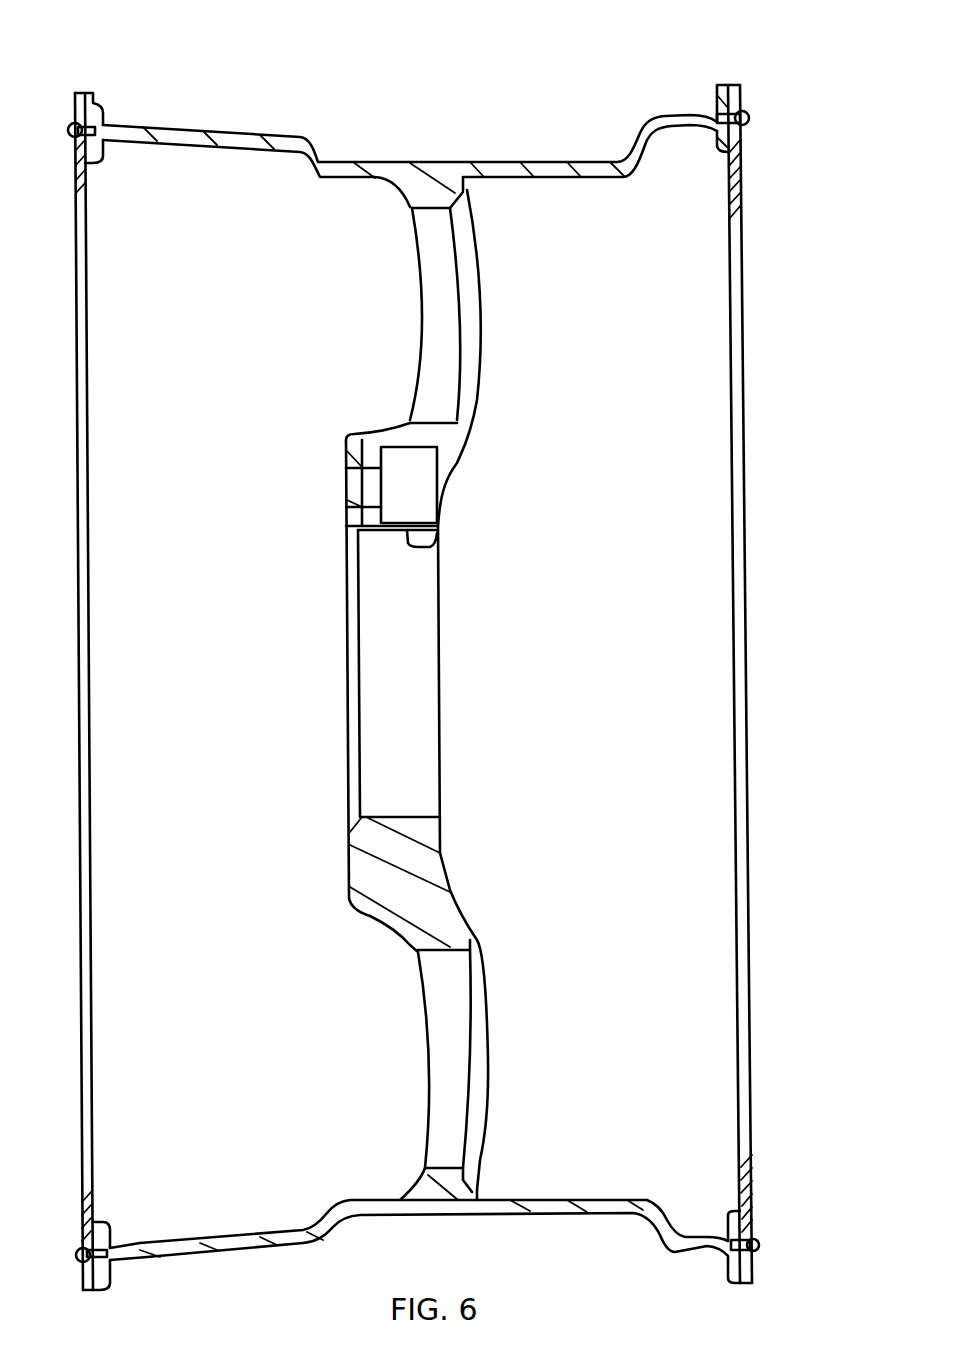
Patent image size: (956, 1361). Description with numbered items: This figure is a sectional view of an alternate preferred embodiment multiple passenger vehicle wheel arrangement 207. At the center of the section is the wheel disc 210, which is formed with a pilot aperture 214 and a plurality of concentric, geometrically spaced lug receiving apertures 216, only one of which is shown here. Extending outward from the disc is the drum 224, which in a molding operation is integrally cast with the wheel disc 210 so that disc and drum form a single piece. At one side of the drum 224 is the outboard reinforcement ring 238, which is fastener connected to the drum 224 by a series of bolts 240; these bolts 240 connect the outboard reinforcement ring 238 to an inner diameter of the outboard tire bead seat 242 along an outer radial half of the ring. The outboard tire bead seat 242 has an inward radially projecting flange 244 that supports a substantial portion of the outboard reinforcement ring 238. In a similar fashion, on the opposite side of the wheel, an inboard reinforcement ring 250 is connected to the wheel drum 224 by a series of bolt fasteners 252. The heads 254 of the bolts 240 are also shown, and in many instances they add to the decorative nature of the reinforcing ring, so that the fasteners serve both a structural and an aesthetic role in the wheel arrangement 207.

The wheel arrangement 207 is at (455, 130).
The drum 224 is at (503, 160).
The bolt fasteners 252 is at (100, 118).
The inboard reinforcement ring 250 is at (90, 183).
The outboard tire bead seat 242 is at (722, 83).
The bolts 240 is at (749, 117).
The outboard reinforcement ring 238 is at (743, 195).
The inward radially projecting flange 244 is at (725, 148).
The wheel disc 210 is at (478, 357).
The lug receiving apertures 216 is at (457, 463).
The pilot aperture 214 is at (437, 537).
The heads of the bolts 254 is at (758, 1243).